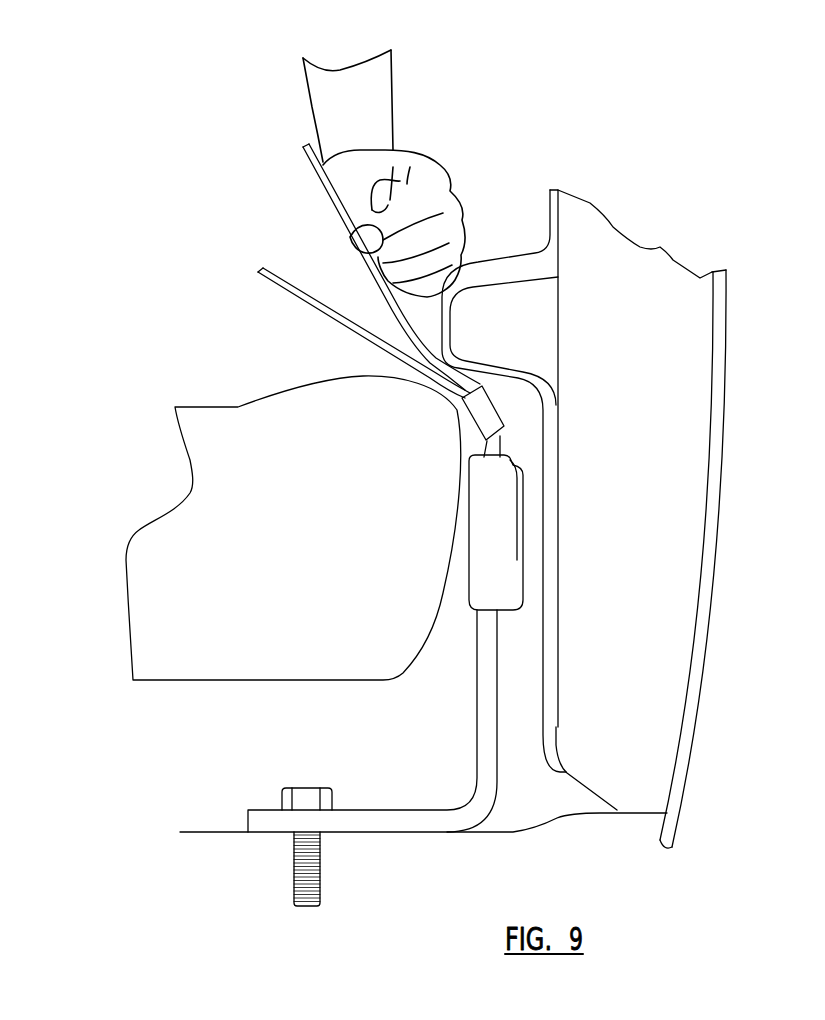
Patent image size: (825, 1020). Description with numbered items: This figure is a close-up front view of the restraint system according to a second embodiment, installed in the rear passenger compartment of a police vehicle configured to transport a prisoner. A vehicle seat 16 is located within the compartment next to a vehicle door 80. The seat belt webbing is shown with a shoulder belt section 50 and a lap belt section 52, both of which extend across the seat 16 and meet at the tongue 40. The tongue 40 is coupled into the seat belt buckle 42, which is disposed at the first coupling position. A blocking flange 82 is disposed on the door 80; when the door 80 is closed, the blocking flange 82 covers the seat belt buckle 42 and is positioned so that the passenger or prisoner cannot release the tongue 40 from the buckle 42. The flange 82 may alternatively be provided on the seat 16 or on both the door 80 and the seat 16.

The vehicle seat 16 is at (347, 660).
The tongue 40 is at (481, 411).
The seat belt buckle 42 is at (477, 801).
The shoulder belt section 50 is at (302, 165).
The lap belt section 52 is at (267, 282).
The vehicle door 80 is at (673, 692).
The blocking flange 82 is at (522, 263).